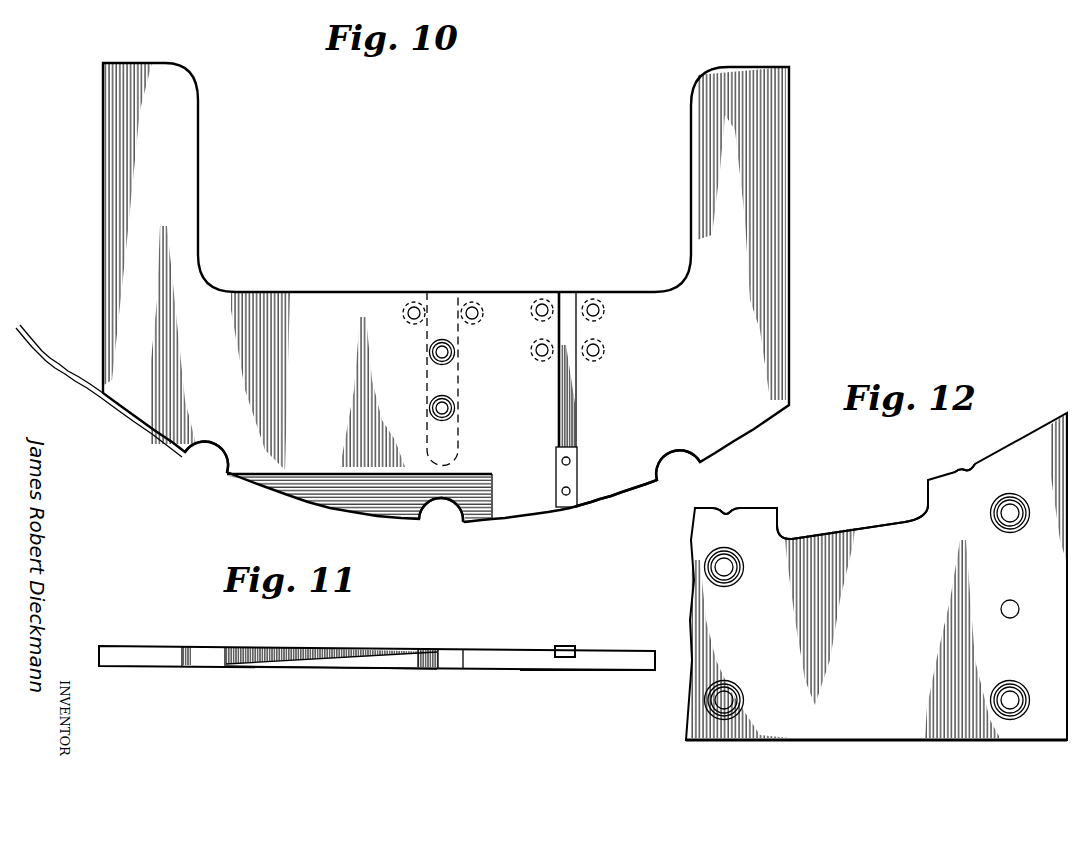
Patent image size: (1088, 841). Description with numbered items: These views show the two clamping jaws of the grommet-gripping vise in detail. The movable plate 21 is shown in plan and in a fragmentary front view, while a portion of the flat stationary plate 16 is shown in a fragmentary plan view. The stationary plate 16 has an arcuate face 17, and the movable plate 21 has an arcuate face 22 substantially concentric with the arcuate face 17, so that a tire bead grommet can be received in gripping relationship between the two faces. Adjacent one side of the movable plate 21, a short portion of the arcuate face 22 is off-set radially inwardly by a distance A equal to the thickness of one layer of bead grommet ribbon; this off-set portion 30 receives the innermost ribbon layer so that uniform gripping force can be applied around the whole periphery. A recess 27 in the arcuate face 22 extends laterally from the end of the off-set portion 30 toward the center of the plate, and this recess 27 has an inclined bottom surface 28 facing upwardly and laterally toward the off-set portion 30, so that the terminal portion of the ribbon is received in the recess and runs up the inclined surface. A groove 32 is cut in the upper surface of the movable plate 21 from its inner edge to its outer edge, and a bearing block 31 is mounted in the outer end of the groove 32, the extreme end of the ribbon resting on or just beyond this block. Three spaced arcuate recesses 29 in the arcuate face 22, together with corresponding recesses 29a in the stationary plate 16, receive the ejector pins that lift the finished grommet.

In FIG. 12, the stationary plate 16 is at (1040, 452).
In FIG. 12, the arcuate face 17 is at (767, 507).
In FIG. 10, the movable plate 21 is at (367, 300).
In FIG. 11, the movable plate 21 is at (520, 657).
In FIG. 10, the arcuate face 22 is at (604, 497).
In FIG. 11, the arcuate face 22 is at (562, 664).
In FIG. 10, the recess 27 is at (279, 472).
In FIG. 11, the recess 27 is at (365, 661).
In FIG. 10, the inclined bottom surface 28 is at (317, 472).
In FIG. 11, the inclined bottom surface 28 is at (340, 656).
In FIG. 10, the arcuate recesses 29 is at (206, 440).
In FIG. 11, the arcuate recesses 29 is at (213, 657).
In FIG. 12, the recesses 29a is at (725, 512).
In FIG. 10, the off-set portion 30 is at (142, 425).
In FIG. 11, the off-set portion 30 is at (139, 655).
In FIG. 10, the bearing block 31 is at (572, 456).
In FIG. 11, the bearing block 31 is at (568, 648).
In FIG. 10, the groove 32 is at (569, 393).
In FIG. 10, the distance A is at (72, 340).